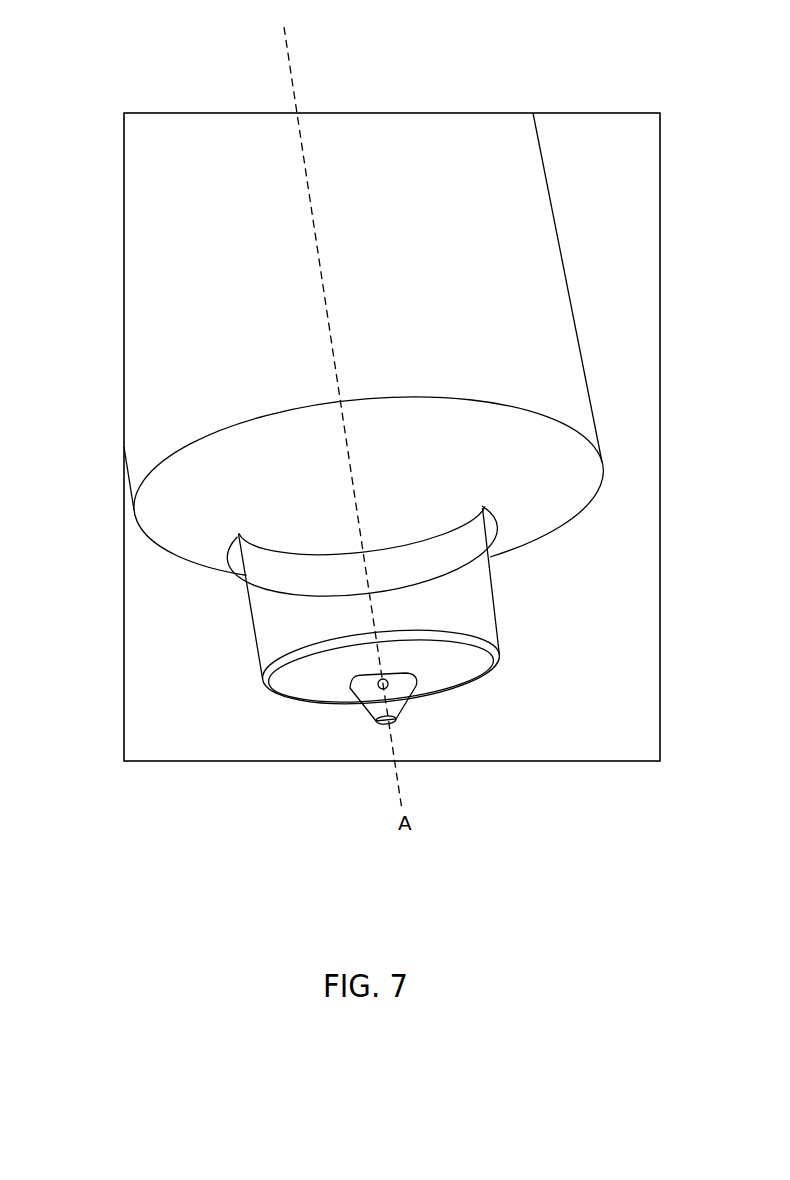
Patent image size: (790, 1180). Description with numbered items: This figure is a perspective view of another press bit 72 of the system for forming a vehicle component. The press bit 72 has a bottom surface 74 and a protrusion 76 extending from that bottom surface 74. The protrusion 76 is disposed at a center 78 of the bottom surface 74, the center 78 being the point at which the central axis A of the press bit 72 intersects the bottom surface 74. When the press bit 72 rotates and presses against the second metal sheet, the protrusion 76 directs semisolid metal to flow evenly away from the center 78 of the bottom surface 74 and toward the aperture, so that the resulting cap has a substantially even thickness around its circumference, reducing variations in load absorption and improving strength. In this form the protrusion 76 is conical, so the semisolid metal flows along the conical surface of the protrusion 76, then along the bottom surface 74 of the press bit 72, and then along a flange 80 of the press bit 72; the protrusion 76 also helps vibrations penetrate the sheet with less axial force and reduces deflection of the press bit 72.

The press bit 72 is at (452, 118).
The flange 80 is at (185, 523).
The bottom surface 74 is at (288, 683).
The center 78 is at (388, 681).
The protrusion 76 is at (383, 722).